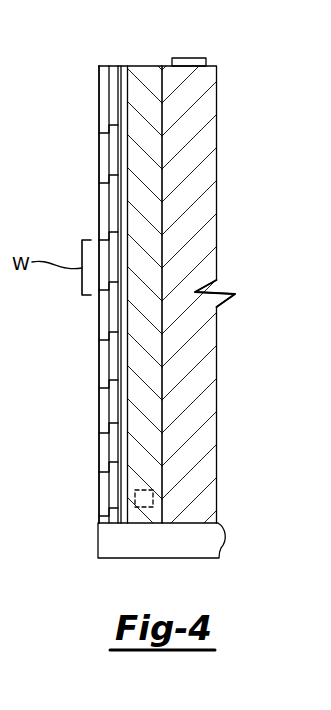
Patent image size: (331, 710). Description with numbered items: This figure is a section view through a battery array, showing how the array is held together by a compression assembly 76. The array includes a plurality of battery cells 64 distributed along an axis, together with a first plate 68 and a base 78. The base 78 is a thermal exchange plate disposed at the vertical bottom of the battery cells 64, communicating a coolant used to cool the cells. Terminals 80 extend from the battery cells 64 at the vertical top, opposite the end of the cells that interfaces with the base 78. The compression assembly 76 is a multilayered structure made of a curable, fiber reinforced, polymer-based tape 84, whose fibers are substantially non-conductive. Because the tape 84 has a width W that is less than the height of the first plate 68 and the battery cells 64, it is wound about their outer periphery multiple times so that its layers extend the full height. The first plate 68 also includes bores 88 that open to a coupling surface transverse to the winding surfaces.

The compression assembly 76 is at (112, 60).
The fiber reinforced, polymer-based tape 84 is at (99, 108).
The battery cells 64 is at (202, 382).
The first plate 68 is at (155, 482).
The terminals 80 is at (189, 58).
The base 78 is at (200, 548).
The bores 88 is at (147, 507).